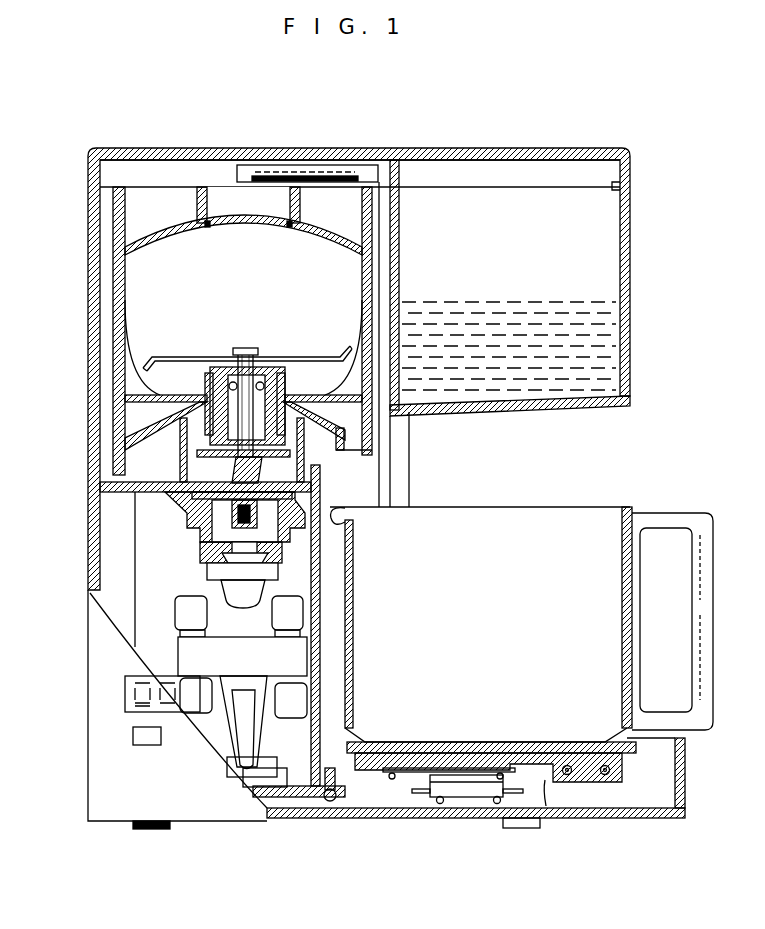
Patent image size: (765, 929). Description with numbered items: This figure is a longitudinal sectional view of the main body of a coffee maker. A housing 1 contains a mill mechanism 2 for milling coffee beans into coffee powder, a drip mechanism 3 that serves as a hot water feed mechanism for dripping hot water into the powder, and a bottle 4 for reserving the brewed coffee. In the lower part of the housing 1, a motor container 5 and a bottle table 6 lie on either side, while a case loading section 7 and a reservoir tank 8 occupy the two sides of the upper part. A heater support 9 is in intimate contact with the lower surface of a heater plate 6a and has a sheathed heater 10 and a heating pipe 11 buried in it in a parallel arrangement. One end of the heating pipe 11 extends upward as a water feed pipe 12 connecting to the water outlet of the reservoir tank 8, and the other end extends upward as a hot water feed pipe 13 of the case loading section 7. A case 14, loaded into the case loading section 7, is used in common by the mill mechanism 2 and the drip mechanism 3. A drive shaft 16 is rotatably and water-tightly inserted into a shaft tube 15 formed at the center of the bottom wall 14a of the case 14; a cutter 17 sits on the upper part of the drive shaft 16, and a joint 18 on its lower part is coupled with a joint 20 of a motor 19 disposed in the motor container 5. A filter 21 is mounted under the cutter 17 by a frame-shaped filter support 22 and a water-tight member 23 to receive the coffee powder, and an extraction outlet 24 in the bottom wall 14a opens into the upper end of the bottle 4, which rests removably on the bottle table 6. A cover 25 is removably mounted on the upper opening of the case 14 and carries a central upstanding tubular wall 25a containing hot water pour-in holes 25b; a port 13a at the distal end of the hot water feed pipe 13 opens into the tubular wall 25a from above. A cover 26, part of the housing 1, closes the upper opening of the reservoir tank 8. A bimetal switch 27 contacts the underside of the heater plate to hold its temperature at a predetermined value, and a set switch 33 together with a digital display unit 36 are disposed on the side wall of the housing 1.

The housing 1 is at (88, 376).
The mill mechanism 2 is at (198, 547).
The drip mechanism 3 is at (547, 808).
The bottle 4 is at (515, 507).
The motor container 5 is at (138, 540).
The bottle table 6 is at (685, 787).
The heater plate 6a is at (450, 742).
The case loading section 7 is at (105, 322).
The reservoir tank 8 is at (632, 253).
The heater support 9 is at (540, 762).
The sheathed heater 10 is at (605, 776).
The heating pipe 11 is at (567, 776).
The water feed pipe 12 is at (410, 476).
The hot water feed pipe 13 is at (330, 165).
The port 13a is at (254, 222).
The case 14 is at (110, 289).
The bottom wall 14a is at (155, 432).
The shaft tube 15 is at (283, 375).
The drive shaft 16 is at (245, 348).
The cutter 17 is at (175, 356).
The joint 18 is at (255, 462).
The motor 19 is at (180, 640).
The joint 20 is at (237, 476).
The filter 21 is at (168, 390).
The filter support 22 is at (120, 410).
The water-tight member 23 is at (294, 390).
The extraction outlet 24 is at (341, 450).
The cover 25 is at (160, 228).
The tubular wall 25a is at (300, 206).
The hot water pour-in holes 25b is at (208, 227).
The cover 26 is at (493, 148).
The bimetal switch 27 is at (465, 800).
The set switch 33 is at (147, 745).
The digital display unit 36 is at (135, 676).